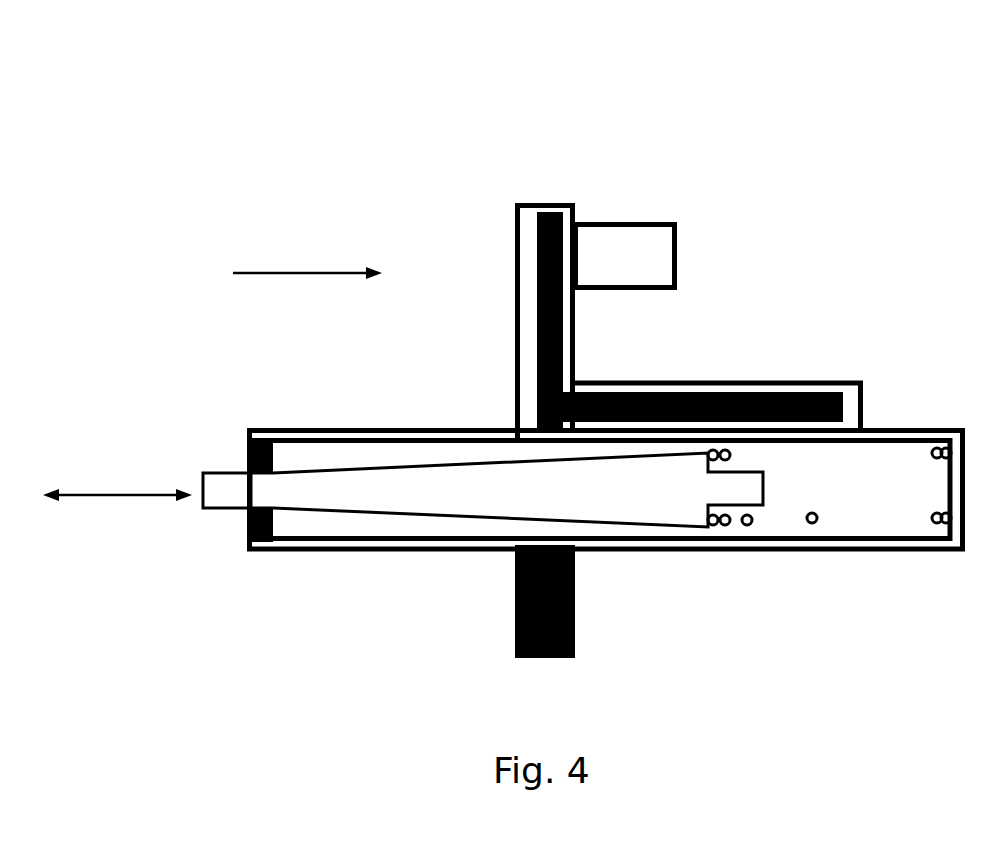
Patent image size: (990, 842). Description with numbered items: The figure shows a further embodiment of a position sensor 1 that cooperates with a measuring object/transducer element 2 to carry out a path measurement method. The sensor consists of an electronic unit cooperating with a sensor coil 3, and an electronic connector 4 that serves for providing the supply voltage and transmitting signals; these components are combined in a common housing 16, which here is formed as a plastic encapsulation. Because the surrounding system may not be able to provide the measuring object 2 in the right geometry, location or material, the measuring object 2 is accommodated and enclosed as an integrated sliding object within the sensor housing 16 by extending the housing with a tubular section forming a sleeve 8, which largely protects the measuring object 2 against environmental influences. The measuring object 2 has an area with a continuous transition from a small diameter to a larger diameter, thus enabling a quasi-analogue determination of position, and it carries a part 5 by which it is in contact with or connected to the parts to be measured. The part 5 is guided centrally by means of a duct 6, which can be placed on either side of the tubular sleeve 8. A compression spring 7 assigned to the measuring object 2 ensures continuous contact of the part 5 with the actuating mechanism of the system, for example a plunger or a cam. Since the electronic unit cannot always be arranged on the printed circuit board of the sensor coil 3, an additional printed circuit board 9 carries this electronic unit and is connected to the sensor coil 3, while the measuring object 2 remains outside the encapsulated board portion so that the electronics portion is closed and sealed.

The position sensor 1 is at (279, 272).
The measuring object/transducer element 2 is at (663, 505).
The sensor coil 3 is at (563, 229).
The electronic connector 4 is at (652, 246).
The part 5 is at (373, 495).
The duct 6 is at (247, 549).
The compression spring 7 is at (814, 522).
The sleeve 8 is at (462, 552).
The printed circuit board 9 is at (722, 397).
The housing 16 is at (515, 204).